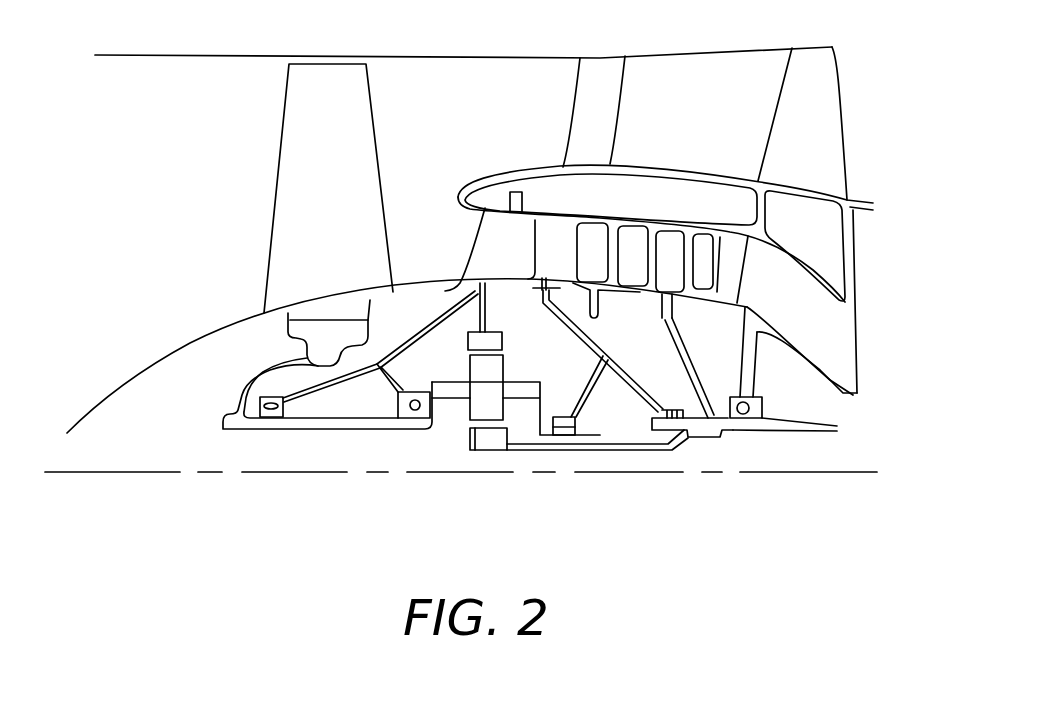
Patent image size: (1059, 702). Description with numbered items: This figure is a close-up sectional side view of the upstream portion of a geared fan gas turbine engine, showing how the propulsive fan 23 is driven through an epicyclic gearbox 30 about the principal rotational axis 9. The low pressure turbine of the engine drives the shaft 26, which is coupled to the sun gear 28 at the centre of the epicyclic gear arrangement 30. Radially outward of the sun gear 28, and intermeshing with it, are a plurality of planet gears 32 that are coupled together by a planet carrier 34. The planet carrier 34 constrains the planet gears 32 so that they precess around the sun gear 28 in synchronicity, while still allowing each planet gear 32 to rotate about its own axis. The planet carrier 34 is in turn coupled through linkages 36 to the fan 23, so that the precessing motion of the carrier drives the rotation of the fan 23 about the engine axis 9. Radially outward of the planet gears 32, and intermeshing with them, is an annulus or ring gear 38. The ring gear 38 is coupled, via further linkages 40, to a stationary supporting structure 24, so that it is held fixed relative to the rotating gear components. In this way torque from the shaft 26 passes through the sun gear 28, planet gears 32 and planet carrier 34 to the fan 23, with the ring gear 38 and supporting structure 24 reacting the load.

The principal rotational axis 9 is at (158, 475).
The propulsive fan 23 is at (303, 188).
The stationary supporting structure 24 is at (480, 240).
The shaft 26 is at (613, 453).
The sun gear 28 is at (488, 437).
The epicyclic gearbox 30 is at (454, 420).
The planet gears 32 is at (475, 410).
The planet carrier 34 is at (536, 410).
The linkages 36 is at (442, 412).
The ring gear 38 is at (493, 341).
The linkages 40 is at (490, 312).